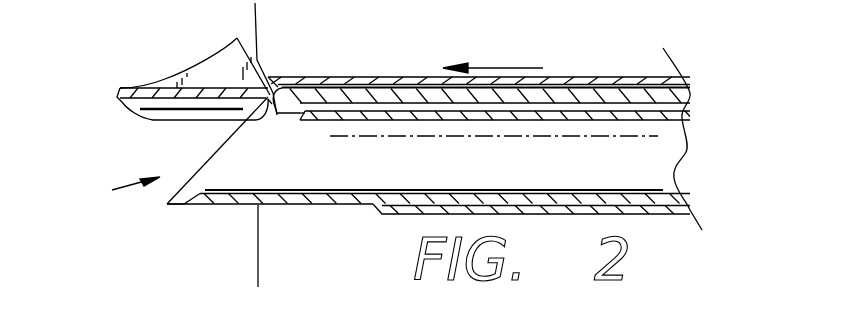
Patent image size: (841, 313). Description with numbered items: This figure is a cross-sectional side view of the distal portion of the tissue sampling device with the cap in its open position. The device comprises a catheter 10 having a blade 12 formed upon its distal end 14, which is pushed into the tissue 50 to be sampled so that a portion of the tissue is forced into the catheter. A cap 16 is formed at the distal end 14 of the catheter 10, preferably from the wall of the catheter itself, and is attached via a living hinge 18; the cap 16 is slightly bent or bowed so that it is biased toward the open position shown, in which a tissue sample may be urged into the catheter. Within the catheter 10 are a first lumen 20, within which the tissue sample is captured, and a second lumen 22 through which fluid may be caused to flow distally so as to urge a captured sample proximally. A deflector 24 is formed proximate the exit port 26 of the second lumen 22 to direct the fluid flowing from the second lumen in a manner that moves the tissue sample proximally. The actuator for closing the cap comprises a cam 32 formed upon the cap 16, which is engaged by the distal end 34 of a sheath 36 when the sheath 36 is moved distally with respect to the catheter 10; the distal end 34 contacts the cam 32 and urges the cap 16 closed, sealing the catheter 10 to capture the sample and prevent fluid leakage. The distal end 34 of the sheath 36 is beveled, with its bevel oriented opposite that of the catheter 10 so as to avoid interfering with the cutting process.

The catheter 10 is at (693, 97).
The blade 12 is at (168, 206).
The distal end 14 is at (118, 191).
The cap 16 is at (140, 117).
The living hinge 18 is at (272, 112).
The first lumen 20 is at (682, 157).
The second lumen 22 is at (693, 112).
The deflector 24 is at (263, 115).
The exit port 26 is at (308, 120).
The cam 32 is at (207, 65).
The distal end 34 is at (292, 77).
The sheath 36 is at (630, 77).
The tissue 50 is at (258, 253).